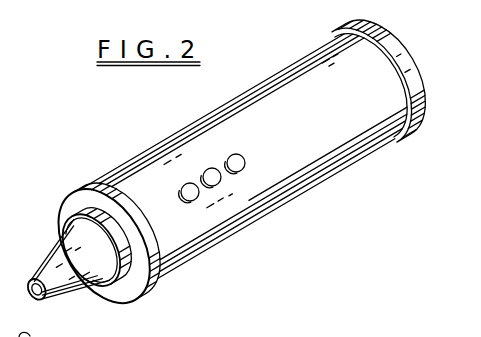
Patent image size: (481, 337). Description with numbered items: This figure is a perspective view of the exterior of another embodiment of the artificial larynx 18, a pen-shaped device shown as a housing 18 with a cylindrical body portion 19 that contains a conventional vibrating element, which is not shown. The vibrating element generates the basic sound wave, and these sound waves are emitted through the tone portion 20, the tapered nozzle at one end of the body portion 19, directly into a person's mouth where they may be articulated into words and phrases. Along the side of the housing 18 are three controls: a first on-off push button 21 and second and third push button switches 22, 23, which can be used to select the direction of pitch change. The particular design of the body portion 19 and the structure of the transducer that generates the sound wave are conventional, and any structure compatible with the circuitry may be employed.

The artificial larynx 18 is at (216, 87).
The body portion 19 is at (131, 153).
The tone portion 20 is at (67, 296).
The first on-off push button 21 is at (194, 200).
The second push button switch 22 is at (218, 183).
The third push button switch 23 is at (244, 167).